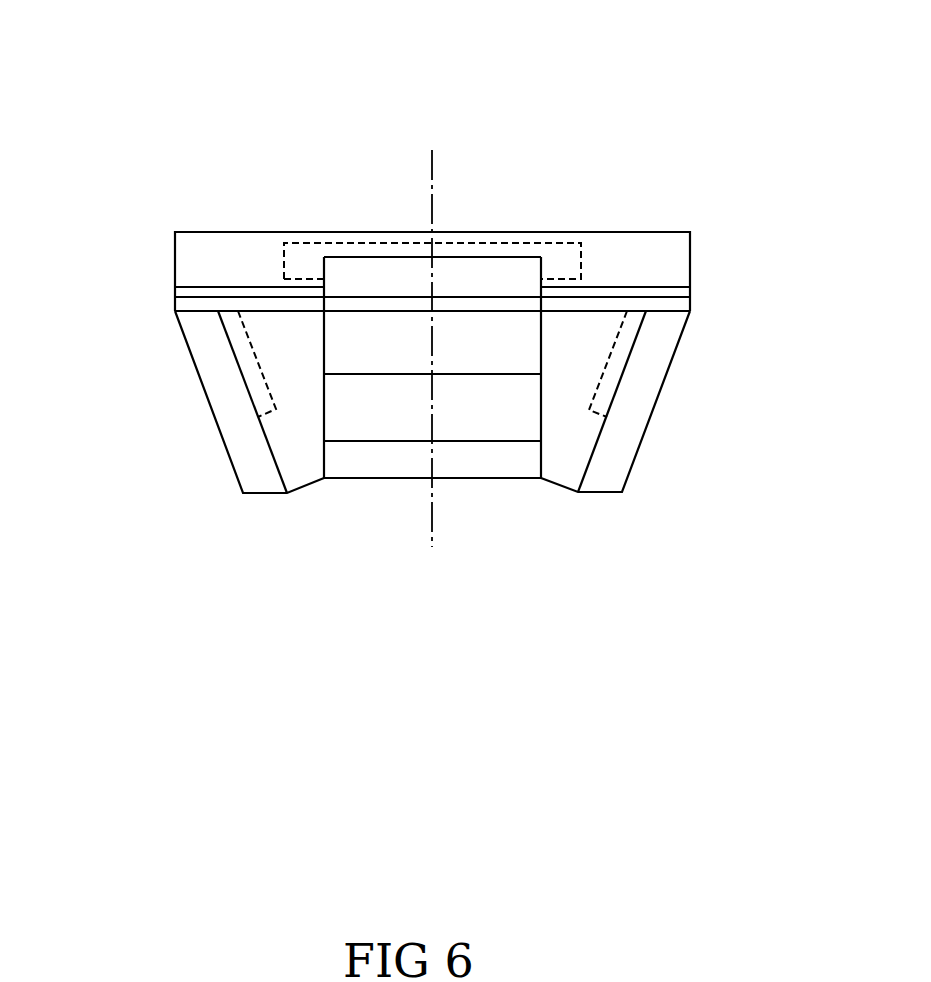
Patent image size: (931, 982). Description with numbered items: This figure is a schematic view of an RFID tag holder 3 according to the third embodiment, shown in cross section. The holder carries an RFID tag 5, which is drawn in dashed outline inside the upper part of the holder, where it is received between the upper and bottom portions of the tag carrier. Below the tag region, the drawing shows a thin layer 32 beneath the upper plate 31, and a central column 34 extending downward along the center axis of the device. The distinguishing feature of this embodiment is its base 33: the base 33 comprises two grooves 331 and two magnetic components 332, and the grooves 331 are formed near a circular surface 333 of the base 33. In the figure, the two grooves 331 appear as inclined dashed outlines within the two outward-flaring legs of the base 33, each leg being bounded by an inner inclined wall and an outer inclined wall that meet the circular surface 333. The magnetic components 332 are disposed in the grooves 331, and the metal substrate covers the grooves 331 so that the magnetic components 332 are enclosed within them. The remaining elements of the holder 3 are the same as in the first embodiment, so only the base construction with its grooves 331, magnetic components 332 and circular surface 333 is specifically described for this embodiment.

The RFID tag holder 3 is at (442, 282).
The RFID tag 5 is at (543, 250).
The upper plate 31 is at (683, 252).
The intermediate plate 32 is at (683, 307).
The base 33 is at (426, 420).
The grooves 331 is at (237, 362).
The magnetic components 332 is at (232, 325).
The circular surface 333 is at (249, 463).
The central column 34 is at (493, 427).